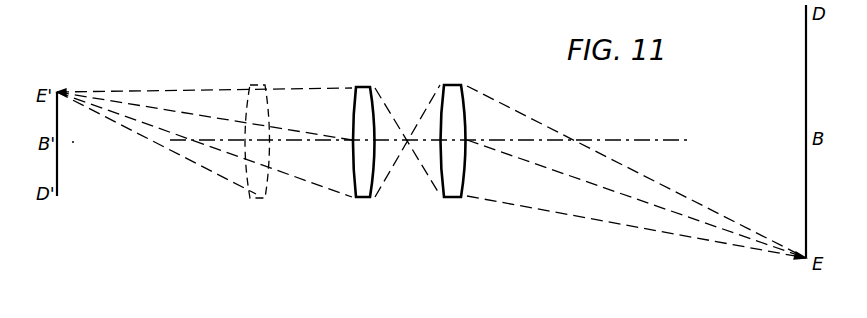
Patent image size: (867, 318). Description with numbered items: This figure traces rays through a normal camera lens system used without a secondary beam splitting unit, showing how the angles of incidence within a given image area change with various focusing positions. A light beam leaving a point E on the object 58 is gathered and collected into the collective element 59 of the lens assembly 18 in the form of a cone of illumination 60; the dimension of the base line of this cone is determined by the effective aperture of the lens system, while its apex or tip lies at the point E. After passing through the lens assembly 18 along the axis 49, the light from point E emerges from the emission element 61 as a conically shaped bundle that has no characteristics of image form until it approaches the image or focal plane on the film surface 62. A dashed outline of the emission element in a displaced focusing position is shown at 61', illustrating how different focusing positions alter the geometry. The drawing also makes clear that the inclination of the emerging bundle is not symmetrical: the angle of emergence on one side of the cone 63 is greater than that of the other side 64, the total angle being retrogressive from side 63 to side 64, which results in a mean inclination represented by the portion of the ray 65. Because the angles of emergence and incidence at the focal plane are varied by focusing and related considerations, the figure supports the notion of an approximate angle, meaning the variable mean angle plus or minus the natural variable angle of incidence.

The lens assembly 18 is at (413, 193).
The optical axis 49 is at (640, 140).
The object 58 is at (805, 90).
The collective element 59 is at (452, 85).
The cone of illumination 60 is at (613, 227).
The emission element 61 is at (377, 126).
The displaced position of second lens 61' is at (268, 127).
The film surface 62 is at (58, 163).
The side of the cone 63 is at (175, 152).
The other side of the cone 64 is at (220, 75).
The ray 65 is at (304, 131).